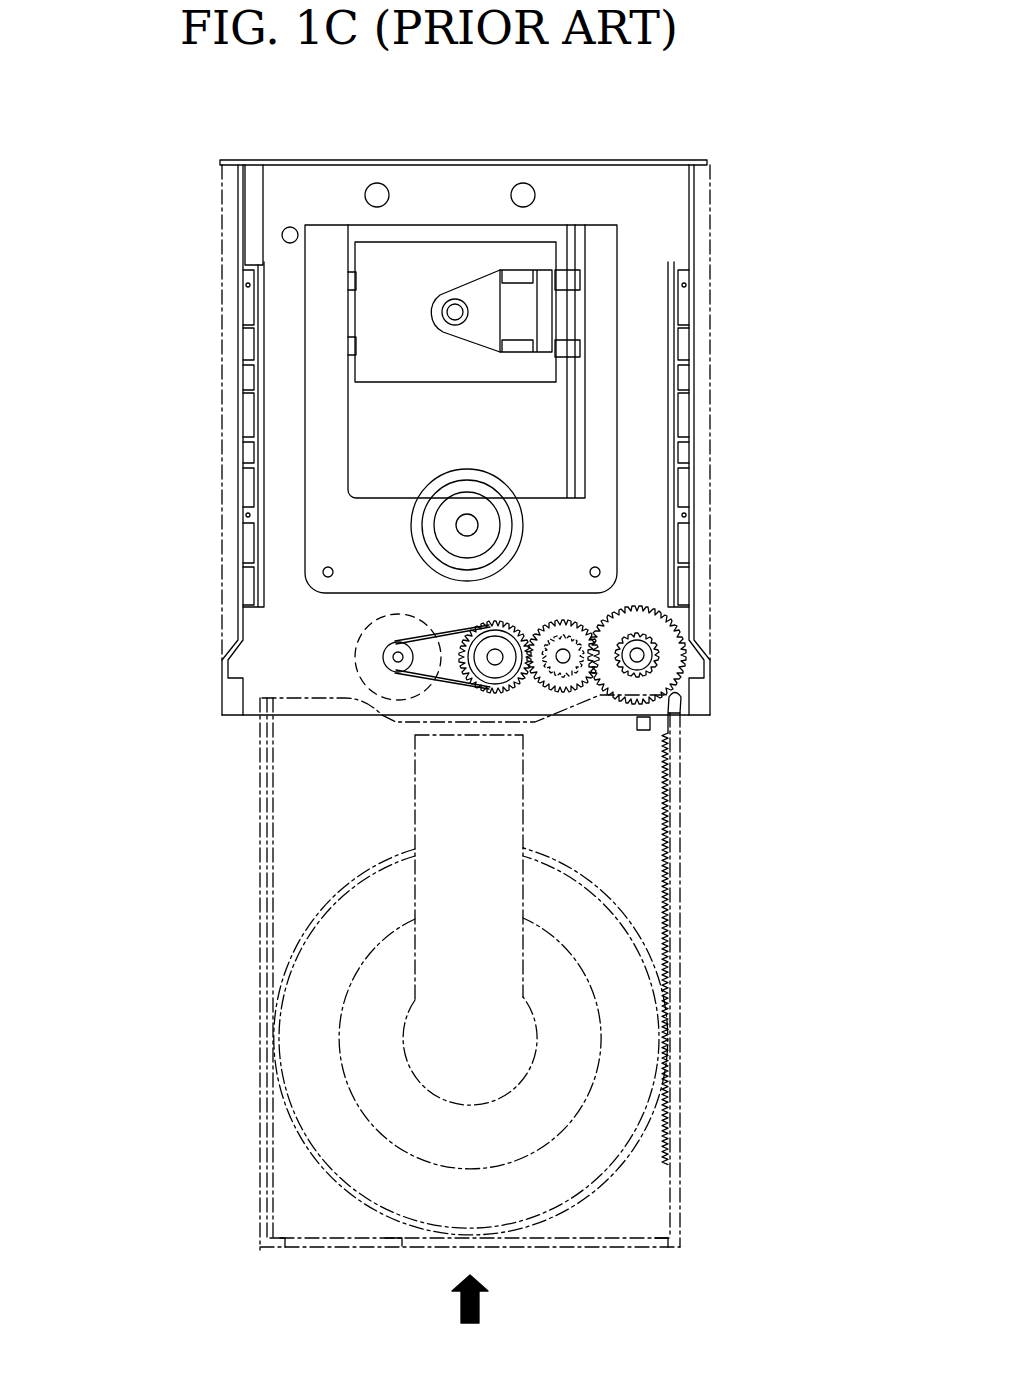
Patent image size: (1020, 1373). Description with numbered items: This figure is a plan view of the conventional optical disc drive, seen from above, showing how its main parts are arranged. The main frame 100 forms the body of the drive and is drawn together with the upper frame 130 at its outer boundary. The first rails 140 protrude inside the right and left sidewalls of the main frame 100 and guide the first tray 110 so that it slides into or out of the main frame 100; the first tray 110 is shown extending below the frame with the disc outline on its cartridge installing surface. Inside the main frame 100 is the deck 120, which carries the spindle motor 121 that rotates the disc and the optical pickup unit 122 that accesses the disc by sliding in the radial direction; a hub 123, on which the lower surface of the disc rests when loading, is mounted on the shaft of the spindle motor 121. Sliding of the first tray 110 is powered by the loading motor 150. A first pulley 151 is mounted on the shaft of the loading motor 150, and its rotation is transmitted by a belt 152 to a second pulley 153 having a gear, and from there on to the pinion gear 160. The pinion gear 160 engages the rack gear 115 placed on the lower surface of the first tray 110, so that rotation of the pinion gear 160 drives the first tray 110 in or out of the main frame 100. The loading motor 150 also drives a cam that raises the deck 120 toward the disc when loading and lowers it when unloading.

The main frame 100 is at (229, 216).
The first tray 110 is at (258, 925).
The rack gear 115 is at (668, 842).
The deck 120 is at (603, 237).
The spindle motor 121 is at (514, 535).
The optical pickup unit 122 is at (455, 305).
The hub 123 is at (458, 527).
The upper frame 130 is at (219, 262).
The first rails 140 is at (264, 262).
The loading motor 150 is at (355, 655).
The first pulley 151 is at (397, 667).
The belt 152 is at (445, 673).
The second pulley 153 is at (500, 673).
The pinion gear 160 is at (657, 655).